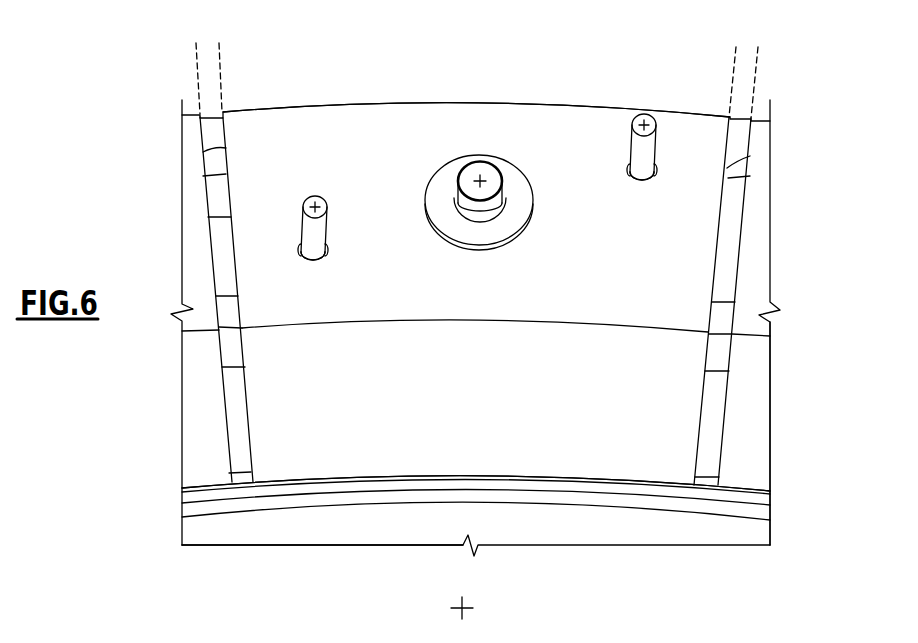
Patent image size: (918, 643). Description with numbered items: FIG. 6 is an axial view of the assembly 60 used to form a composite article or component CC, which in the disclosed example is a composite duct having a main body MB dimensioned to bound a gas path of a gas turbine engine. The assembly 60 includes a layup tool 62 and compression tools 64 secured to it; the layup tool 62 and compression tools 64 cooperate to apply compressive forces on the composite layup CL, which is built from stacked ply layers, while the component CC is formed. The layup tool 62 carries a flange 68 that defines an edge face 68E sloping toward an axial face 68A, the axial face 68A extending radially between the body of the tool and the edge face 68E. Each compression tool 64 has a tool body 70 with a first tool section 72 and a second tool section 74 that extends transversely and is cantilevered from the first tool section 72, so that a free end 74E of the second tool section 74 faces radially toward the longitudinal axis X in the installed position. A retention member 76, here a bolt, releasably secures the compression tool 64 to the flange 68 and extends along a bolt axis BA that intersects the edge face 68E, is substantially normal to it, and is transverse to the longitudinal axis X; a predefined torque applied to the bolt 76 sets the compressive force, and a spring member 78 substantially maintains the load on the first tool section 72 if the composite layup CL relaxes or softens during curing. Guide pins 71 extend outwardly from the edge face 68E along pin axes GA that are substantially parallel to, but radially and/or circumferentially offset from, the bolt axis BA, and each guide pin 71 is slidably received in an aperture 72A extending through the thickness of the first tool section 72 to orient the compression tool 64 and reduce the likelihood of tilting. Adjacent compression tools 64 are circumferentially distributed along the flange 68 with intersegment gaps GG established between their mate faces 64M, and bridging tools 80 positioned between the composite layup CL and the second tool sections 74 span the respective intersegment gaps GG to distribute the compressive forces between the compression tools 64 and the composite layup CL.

The assembly 60 is at (126, 77).
The layup tool 62 is at (754, 214).
The compression tool 64 is at (275, 94).
The mate face 64M is at (203, 152).
The intersegment gap GG is at (257, 52).
The flange 68 is at (170, 299).
The edge face 68E is at (210, 218).
The axial face 68A is at (231, 351).
The tool body 70 is at (378, 133).
The first tool section 72 is at (557, 118).
The guide pin 71 is at (310, 196).
The pin axis GA is at (322, 198).
The aperture 72A is at (319, 263).
The bolt axis BA is at (478, 180).
The retention member 76 is at (499, 158).
The spring member 78 is at (517, 190).
The second tool section 74 is at (724, 426).
The free end 74E is at (310, 480).
The bridging tool 80 is at (239, 432).
The main body MB is at (642, 527).
The component CC is at (828, 433).
The composite layup CL is at (781, 524).
The longitudinal axis X is at (472, 598).